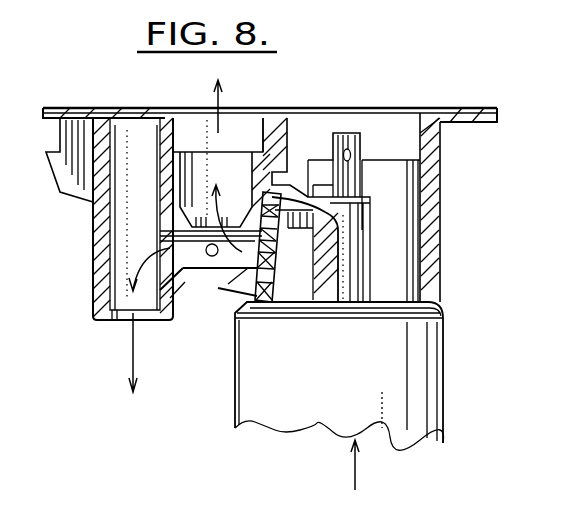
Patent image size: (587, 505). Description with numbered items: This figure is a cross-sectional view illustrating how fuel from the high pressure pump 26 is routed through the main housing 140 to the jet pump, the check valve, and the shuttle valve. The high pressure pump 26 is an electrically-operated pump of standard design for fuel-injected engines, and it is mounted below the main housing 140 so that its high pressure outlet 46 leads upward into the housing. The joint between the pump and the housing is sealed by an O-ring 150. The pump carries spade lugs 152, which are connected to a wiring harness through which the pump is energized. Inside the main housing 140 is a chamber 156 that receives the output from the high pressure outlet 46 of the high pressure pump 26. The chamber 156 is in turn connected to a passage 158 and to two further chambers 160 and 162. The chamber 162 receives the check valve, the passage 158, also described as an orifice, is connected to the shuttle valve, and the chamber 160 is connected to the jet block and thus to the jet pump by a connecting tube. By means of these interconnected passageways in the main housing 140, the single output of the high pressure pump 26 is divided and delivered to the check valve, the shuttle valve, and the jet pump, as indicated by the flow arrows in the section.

The high pressure pump 26 is at (381, 380).
The high pressure outlet 46 is at (278, 228).
The main housing 140 is at (283, 147).
The O-ring 150 is at (270, 278).
The spade lugs 152 is at (347, 152).
The chamber 156 is at (190, 257).
The passage 158 is at (212, 257).
The chamber 160 is at (127, 231).
The chamber 162 is at (197, 173).